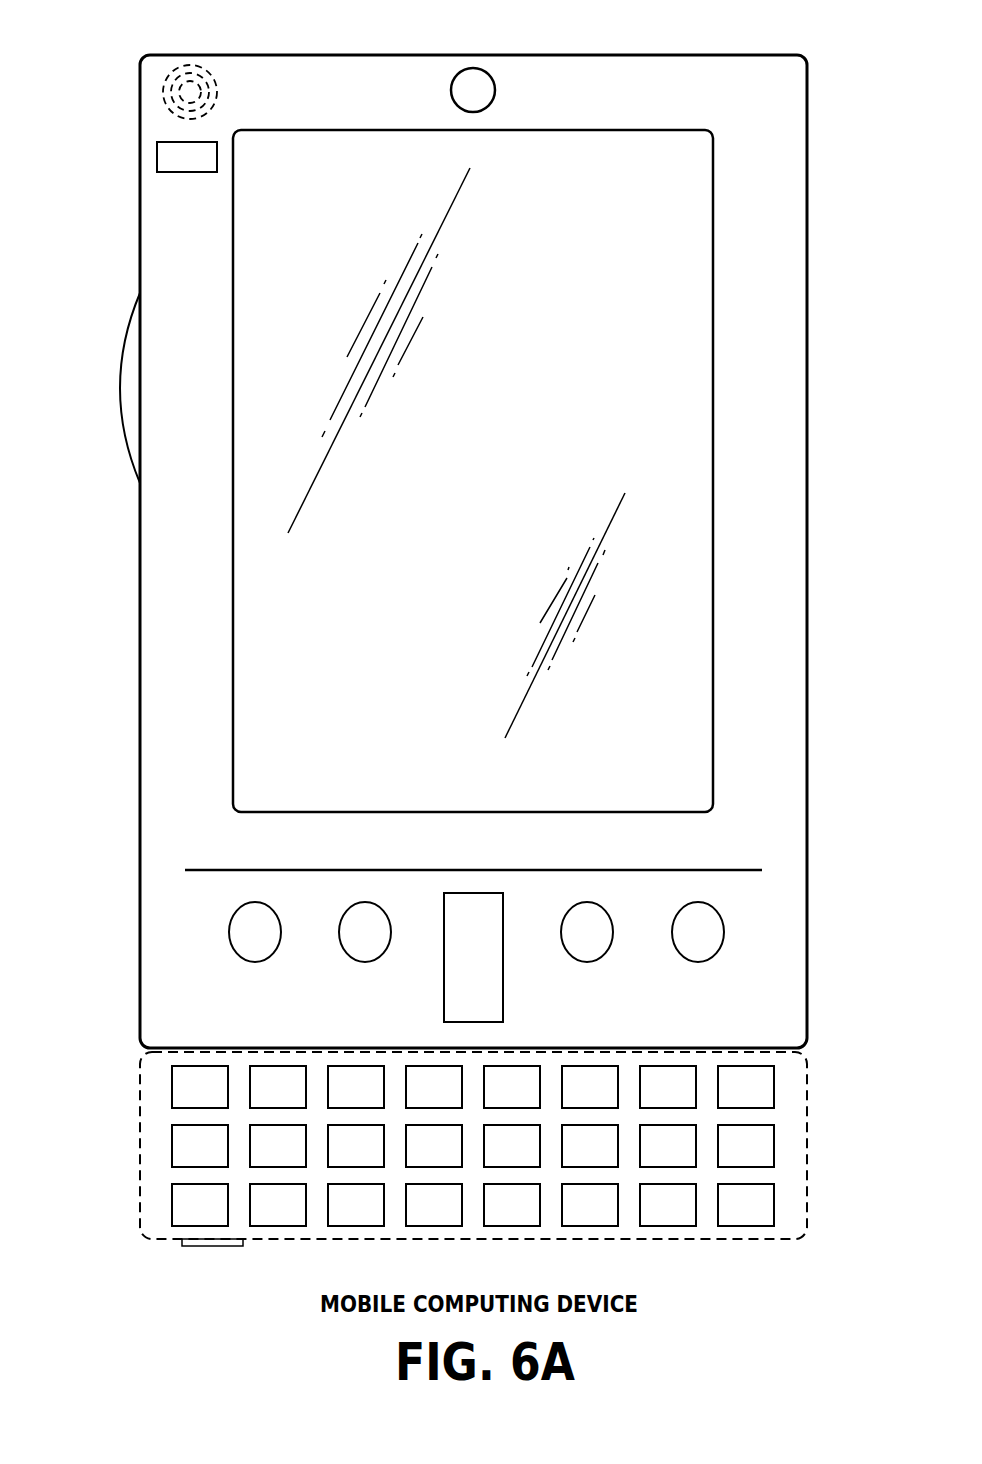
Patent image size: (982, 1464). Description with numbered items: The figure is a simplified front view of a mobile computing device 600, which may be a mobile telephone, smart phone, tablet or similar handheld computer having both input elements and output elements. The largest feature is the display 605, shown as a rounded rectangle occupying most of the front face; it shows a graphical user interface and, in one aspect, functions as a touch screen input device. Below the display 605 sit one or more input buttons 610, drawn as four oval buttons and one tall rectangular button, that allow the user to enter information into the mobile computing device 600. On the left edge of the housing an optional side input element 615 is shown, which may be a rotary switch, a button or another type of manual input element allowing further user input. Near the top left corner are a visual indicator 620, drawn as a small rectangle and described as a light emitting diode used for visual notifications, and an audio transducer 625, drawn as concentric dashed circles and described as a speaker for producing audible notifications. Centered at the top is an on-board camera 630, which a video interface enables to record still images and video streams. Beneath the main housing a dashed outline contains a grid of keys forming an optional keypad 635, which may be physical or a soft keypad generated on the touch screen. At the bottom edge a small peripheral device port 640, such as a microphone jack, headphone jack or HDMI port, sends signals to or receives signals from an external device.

The mobile computing device 600 is at (770, 55).
The display 605 is at (258, 647).
The input buttons 610 is at (258, 962).
The side input element 615 is at (118, 390).
The visual indicator 620 is at (157, 157).
The audio transducer 625 is at (158, 93).
The on-board camera 630 is at (472, 68).
The keypad 635 is at (150, 1143).
The peripheral device port 640 is at (190, 1247).